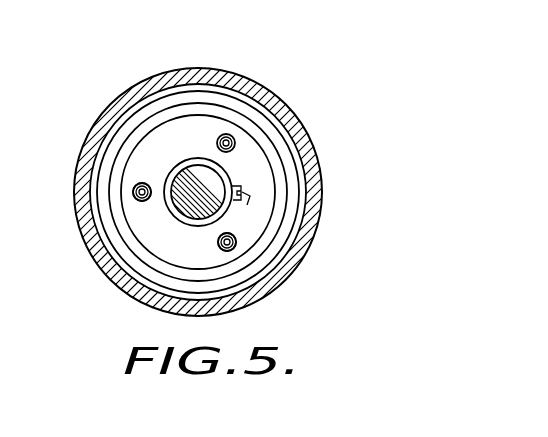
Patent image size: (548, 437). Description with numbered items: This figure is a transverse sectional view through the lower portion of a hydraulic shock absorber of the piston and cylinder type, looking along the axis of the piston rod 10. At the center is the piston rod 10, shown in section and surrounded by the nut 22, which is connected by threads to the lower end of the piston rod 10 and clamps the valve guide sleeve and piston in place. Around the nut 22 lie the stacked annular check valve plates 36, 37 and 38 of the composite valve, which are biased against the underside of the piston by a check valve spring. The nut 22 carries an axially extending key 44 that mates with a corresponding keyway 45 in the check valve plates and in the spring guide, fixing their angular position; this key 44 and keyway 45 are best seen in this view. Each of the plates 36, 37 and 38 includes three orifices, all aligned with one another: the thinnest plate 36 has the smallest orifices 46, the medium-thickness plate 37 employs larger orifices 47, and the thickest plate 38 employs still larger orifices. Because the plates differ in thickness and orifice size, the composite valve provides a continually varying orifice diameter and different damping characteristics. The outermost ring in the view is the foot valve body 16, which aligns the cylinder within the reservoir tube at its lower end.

The piston rod 10 is at (203, 168).
The foot valve body 16 is at (100, 158).
The nut 22 is at (181, 160).
The annular check valve plate 36 is at (143, 183).
The annular check valve plate 37 is at (217, 241).
The annular check valve plate 38 is at (134, 143).
The key 44 is at (238, 186).
The keyway 45 is at (243, 203).
The orifices 46 is at (141, 201).
The orifices 47 is at (221, 248).